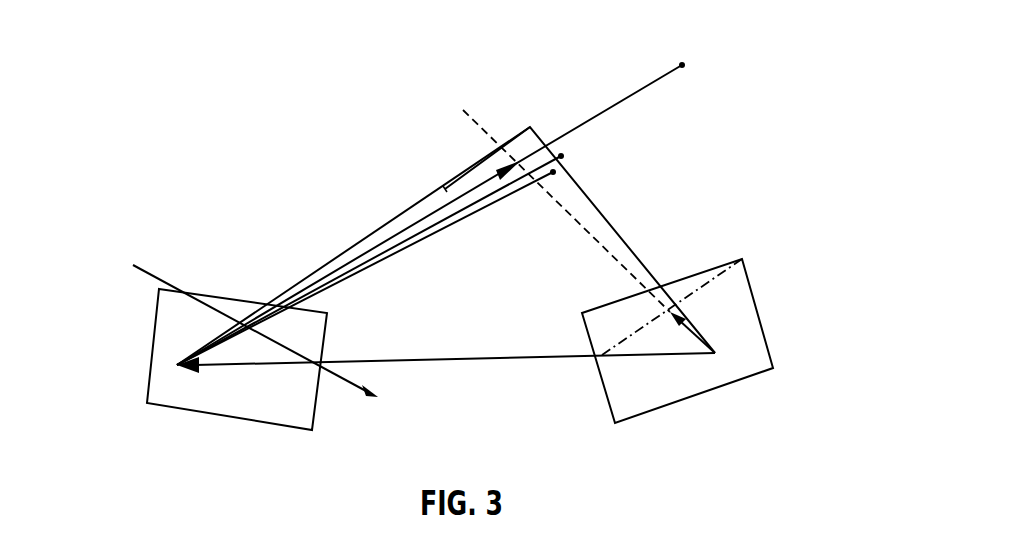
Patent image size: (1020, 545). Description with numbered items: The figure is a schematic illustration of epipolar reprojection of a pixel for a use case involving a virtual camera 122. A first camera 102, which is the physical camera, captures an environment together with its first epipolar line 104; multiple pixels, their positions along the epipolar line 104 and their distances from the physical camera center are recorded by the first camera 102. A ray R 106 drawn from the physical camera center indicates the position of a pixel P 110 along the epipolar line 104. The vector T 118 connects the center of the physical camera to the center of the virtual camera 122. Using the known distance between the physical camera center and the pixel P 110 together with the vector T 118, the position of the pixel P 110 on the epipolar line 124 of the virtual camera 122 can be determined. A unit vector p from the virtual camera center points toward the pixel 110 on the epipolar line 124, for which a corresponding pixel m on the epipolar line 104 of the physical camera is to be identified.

The first camera 102 is at (153, 343).
The first epipolar line 104 is at (152, 275).
The ray R 106 is at (447, 192).
The pixel P 110 is at (510, 148).
The vector T 118 is at (522, 362).
The virtual camera 122 is at (763, 332).
The epipolar line of the virtual camera 124 is at (722, 274).